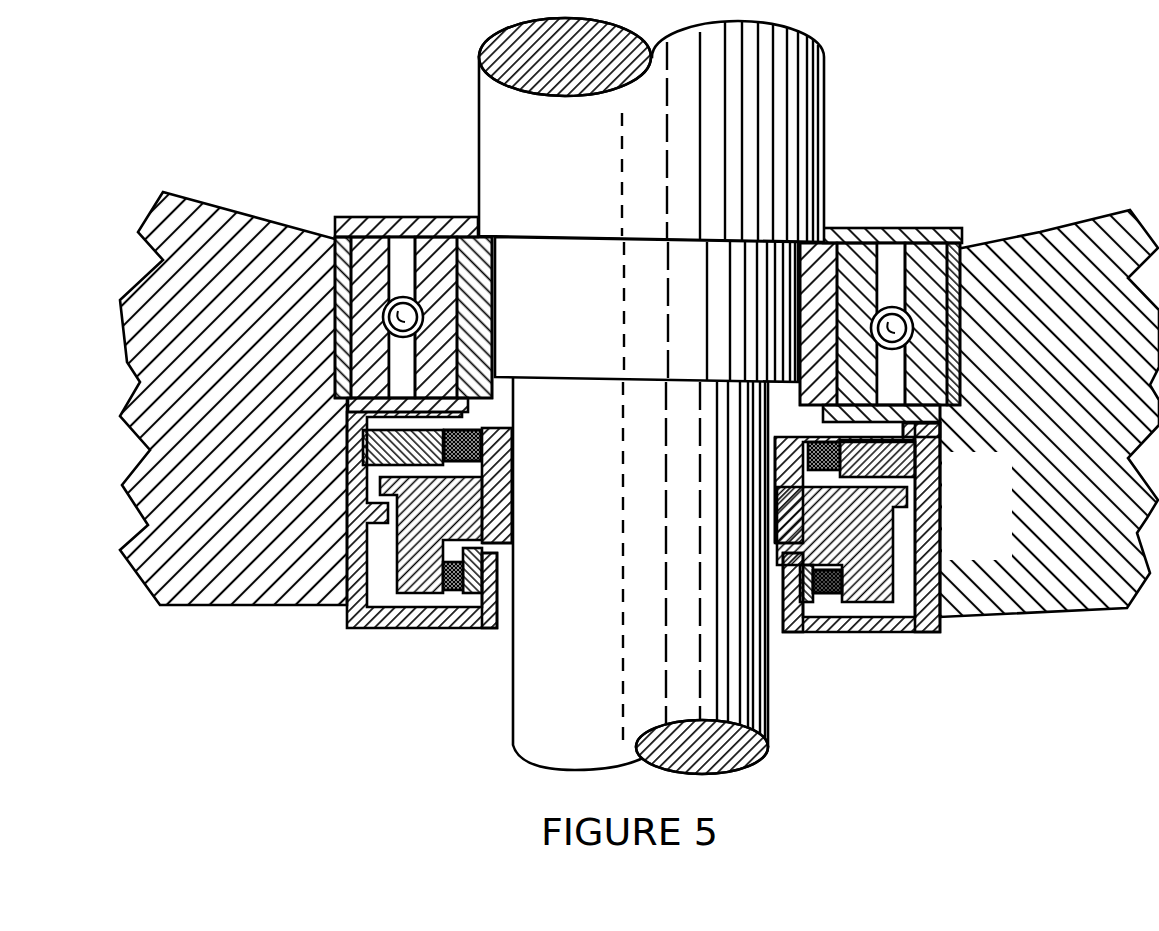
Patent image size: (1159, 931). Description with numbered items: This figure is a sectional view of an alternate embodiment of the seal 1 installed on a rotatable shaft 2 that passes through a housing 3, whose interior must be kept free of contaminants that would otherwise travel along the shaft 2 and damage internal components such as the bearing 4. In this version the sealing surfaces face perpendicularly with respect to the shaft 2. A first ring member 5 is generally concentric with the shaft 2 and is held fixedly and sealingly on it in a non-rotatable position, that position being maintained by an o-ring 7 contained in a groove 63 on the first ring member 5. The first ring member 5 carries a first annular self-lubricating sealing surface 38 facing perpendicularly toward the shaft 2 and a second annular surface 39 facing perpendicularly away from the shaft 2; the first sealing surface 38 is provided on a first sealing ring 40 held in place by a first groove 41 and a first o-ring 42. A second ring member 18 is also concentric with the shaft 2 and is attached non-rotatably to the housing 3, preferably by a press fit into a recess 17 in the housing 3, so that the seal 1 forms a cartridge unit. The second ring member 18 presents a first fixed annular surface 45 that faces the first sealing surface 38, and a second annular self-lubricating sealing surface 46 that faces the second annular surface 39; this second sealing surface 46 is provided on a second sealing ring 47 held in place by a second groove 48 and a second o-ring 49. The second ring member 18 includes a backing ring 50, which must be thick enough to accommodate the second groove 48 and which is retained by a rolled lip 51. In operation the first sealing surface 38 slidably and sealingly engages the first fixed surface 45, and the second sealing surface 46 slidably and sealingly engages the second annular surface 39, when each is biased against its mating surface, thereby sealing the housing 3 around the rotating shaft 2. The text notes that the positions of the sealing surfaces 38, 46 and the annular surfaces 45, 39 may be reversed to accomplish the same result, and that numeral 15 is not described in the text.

The seal 1 is at (972, 733).
The shaft 2 is at (770, 716).
The housing 3 is at (262, 606).
The bearing 4 is at (392, 188).
The first ring member 5 is at (883, 638).
The o-ring 7 is at (498, 506).
The sealing lip 15 is at (466, 436).
The recess 17 is at (942, 540).
The second ring member 18 is at (392, 630).
The first annular self-lubricating sealing surface 38 is at (490, 580).
The second annular surface 39 is at (470, 406).
The first sealing ring 40 is at (840, 600).
The first groove 41 is at (466, 628).
The first o-ring 42 is at (822, 594).
The first fixed annular surface 45 is at (812, 612).
The second annular self-lubricating sealing surface 46 is at (488, 478).
The second sealing ring 47 is at (792, 462).
The second groove 48 is at (470, 437).
The second o-ring 49 is at (466, 436).
The backing ring 50 is at (943, 484).
The rolled lip 51 is at (944, 440).
The groove 63 is at (502, 548).